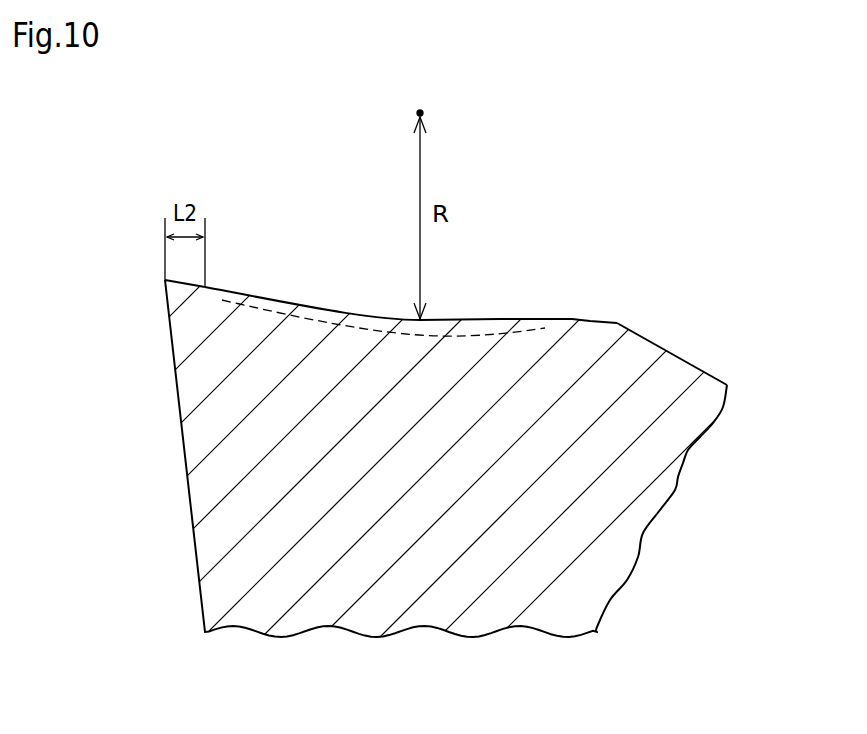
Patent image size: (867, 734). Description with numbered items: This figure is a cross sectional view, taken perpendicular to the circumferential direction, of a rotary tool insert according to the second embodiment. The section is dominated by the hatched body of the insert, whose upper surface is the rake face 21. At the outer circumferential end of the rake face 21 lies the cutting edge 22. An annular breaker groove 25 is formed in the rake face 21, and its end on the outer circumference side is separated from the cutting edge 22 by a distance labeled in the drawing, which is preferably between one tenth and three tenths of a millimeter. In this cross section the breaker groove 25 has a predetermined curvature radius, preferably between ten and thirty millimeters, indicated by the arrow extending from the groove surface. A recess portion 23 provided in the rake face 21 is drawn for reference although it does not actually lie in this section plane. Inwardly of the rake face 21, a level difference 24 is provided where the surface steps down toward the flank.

The rake face 21 is at (590, 322).
The cutting edge 22 is at (165, 280).
The recess portion 23 is at (283, 308).
The level difference 24 is at (668, 353).
The breaker groove 25 is at (485, 323).